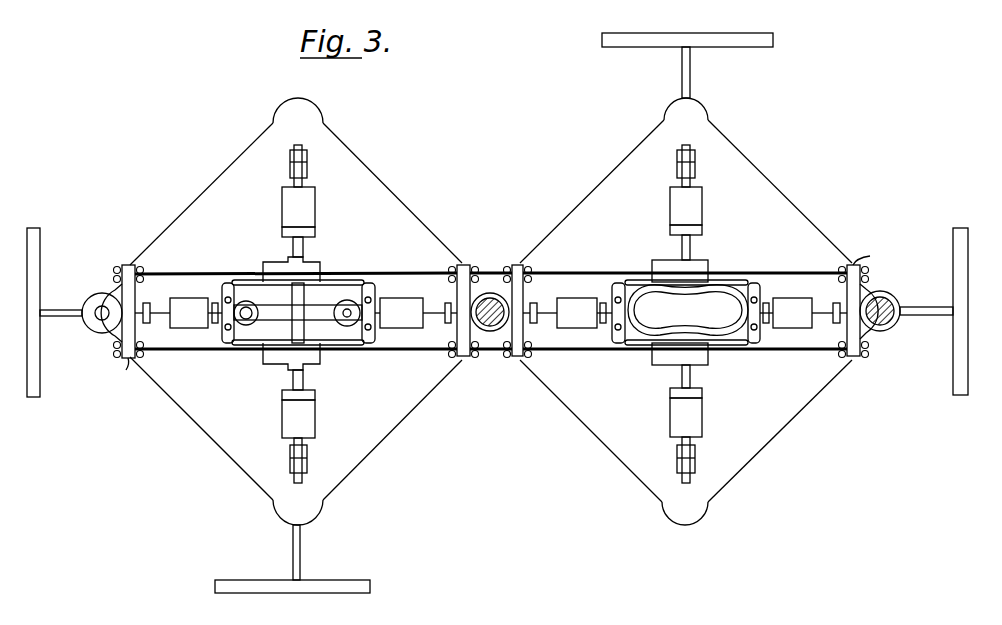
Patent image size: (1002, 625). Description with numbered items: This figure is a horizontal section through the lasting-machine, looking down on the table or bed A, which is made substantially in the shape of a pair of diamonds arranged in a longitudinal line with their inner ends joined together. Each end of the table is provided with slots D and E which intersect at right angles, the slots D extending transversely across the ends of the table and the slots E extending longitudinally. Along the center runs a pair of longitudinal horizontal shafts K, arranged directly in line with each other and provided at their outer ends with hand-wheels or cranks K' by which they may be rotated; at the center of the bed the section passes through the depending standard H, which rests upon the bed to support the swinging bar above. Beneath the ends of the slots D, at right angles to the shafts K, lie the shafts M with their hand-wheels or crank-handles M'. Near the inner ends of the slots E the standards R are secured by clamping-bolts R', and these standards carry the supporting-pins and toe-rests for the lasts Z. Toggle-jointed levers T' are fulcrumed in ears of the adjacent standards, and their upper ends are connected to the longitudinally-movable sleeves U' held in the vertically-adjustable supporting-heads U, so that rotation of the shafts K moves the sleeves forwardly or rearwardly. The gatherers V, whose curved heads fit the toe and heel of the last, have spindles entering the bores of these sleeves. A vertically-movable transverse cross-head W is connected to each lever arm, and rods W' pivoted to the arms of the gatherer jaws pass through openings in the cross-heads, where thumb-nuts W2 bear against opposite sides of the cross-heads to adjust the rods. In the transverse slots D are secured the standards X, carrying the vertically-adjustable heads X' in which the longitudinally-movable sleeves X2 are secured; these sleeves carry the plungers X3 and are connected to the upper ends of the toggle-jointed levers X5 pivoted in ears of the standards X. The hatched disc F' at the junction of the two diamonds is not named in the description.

The table or bed A is at (592, 196).
The shaft M is at (511, 313).
The hand-wheel or crank-handle M' is at (494, 313).
The longitudinal horizontal shaft K is at (496, 298).
The hand-wheel or crank K' is at (498, 312).
The depending standard H is at (880, 331).
The cross-head W is at (497, 309).
The rod W' is at (491, 309).
The thumb-nut W2 is at (506, 312).
The toggle-jointed lever T' is at (491, 304).
The supporting-head U is at (491, 313).
The sleeve U' is at (491, 323).
The gatherer V is at (224, 343).
The longitudinal slot E is at (327, 322).
The transverse slot D is at (304, 292).
The standard R is at (297, 307).
The clamping-bolt R' is at (245, 313).
The standard X is at (492, 312).
The vertically-adjustable head X' is at (686, 412).
The sleeve X2 is at (303, 186).
The plunger X3 is at (308, 266).
The toggle-jointed lever X5 is at (308, 166).
The disc F' is at (490, 338).
The last Z is at (688, 310).